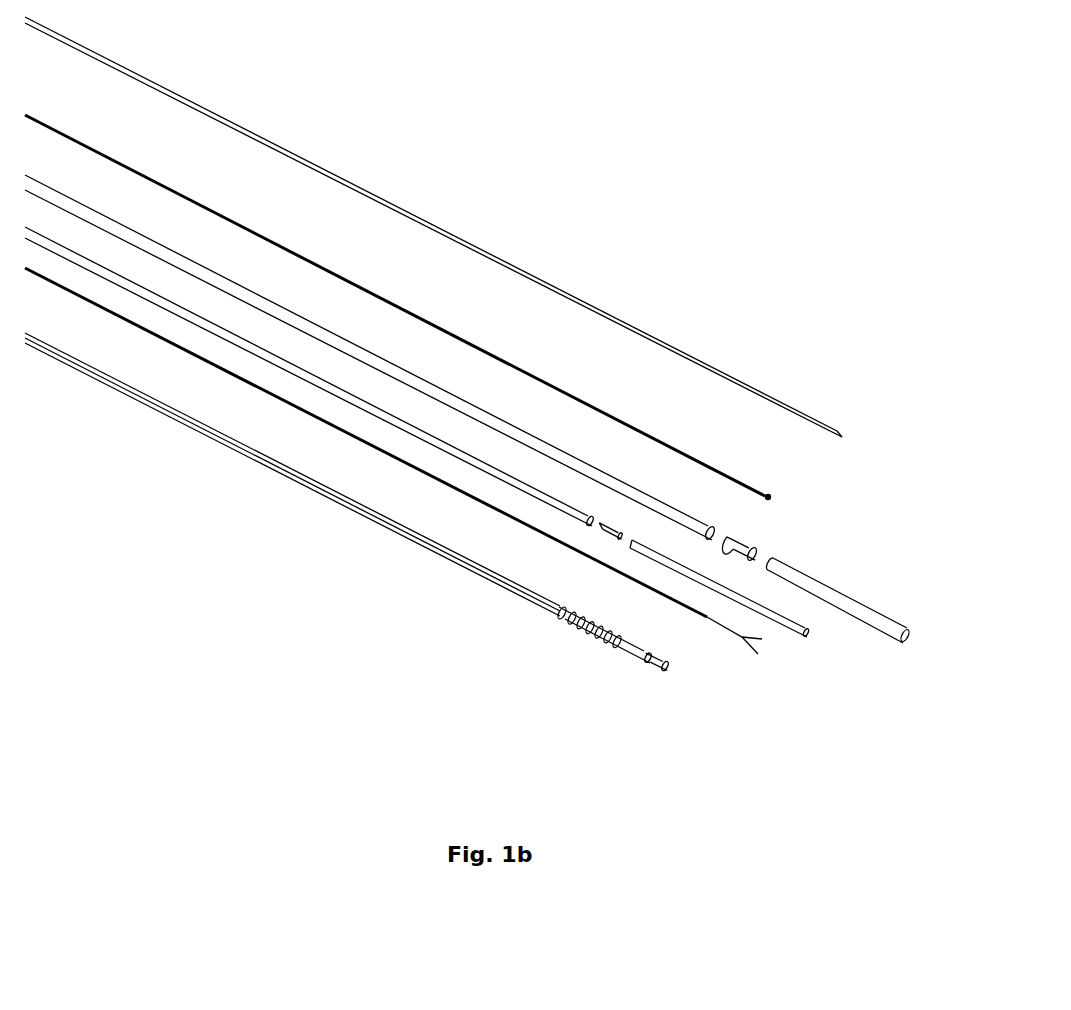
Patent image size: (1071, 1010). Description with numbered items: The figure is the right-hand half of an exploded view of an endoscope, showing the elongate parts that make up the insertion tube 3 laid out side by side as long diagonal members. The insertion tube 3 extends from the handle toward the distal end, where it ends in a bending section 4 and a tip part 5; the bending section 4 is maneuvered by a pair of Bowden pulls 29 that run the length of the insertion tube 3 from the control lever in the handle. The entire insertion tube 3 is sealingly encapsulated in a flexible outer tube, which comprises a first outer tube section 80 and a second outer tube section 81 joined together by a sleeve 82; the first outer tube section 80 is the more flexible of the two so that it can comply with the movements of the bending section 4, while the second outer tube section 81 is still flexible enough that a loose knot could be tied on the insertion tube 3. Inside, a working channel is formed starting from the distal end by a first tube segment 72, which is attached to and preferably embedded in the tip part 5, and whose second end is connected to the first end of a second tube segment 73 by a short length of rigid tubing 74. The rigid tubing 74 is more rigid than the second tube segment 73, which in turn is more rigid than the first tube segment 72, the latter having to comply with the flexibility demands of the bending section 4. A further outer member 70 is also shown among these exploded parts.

The insertion tube 3 is at (367, 542).
The bending section 4 is at (655, 672).
The tip part 5 is at (587, 635).
The Bowden pulls 29 is at (328, 493).
The outer tube 70 is at (538, 278).
The first tube segment 72 is at (795, 633).
The second tube segment 73 is at (198, 313).
The rigid tubing 74 is at (613, 523).
The first outer tube section 80 is at (837, 587).
The second outer tube section 81 is at (387, 357).
The sleeve 82 is at (753, 545).